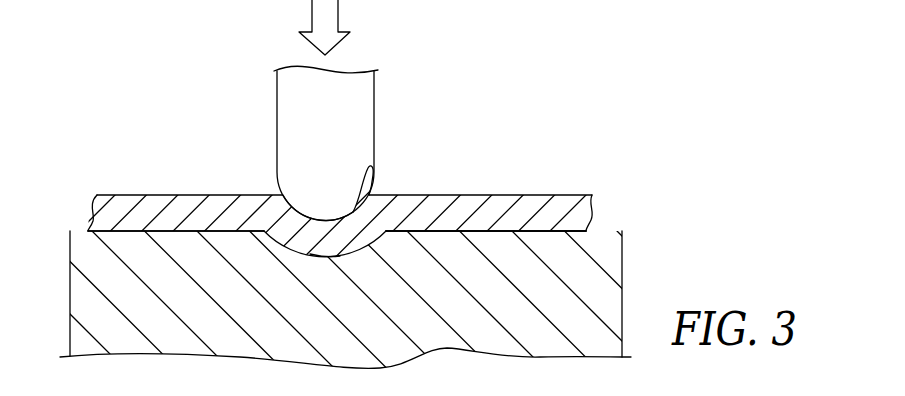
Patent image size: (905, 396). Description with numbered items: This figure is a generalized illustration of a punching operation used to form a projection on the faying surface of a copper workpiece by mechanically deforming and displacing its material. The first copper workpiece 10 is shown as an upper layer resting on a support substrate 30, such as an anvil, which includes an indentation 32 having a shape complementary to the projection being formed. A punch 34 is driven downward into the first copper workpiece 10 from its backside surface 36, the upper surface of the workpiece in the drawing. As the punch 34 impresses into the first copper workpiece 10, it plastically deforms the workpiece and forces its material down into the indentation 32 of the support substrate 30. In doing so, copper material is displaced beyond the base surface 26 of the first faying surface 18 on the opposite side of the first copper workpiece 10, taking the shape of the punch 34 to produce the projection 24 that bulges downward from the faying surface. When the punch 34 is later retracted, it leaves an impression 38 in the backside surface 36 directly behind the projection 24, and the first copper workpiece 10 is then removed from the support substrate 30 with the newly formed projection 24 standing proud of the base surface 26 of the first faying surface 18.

The first copper workpiece 10 is at (381, 252).
The first faying surface 18 is at (455, 233).
The projection 24 is at (292, 250).
The base surface 26 is at (249, 232).
The support substrate 30 is at (102, 265).
The indentation 32 is at (333, 242).
The punch 34 is at (340, 121).
The backside surface 36 is at (494, 194).
The impression 38 is at (371, 166).